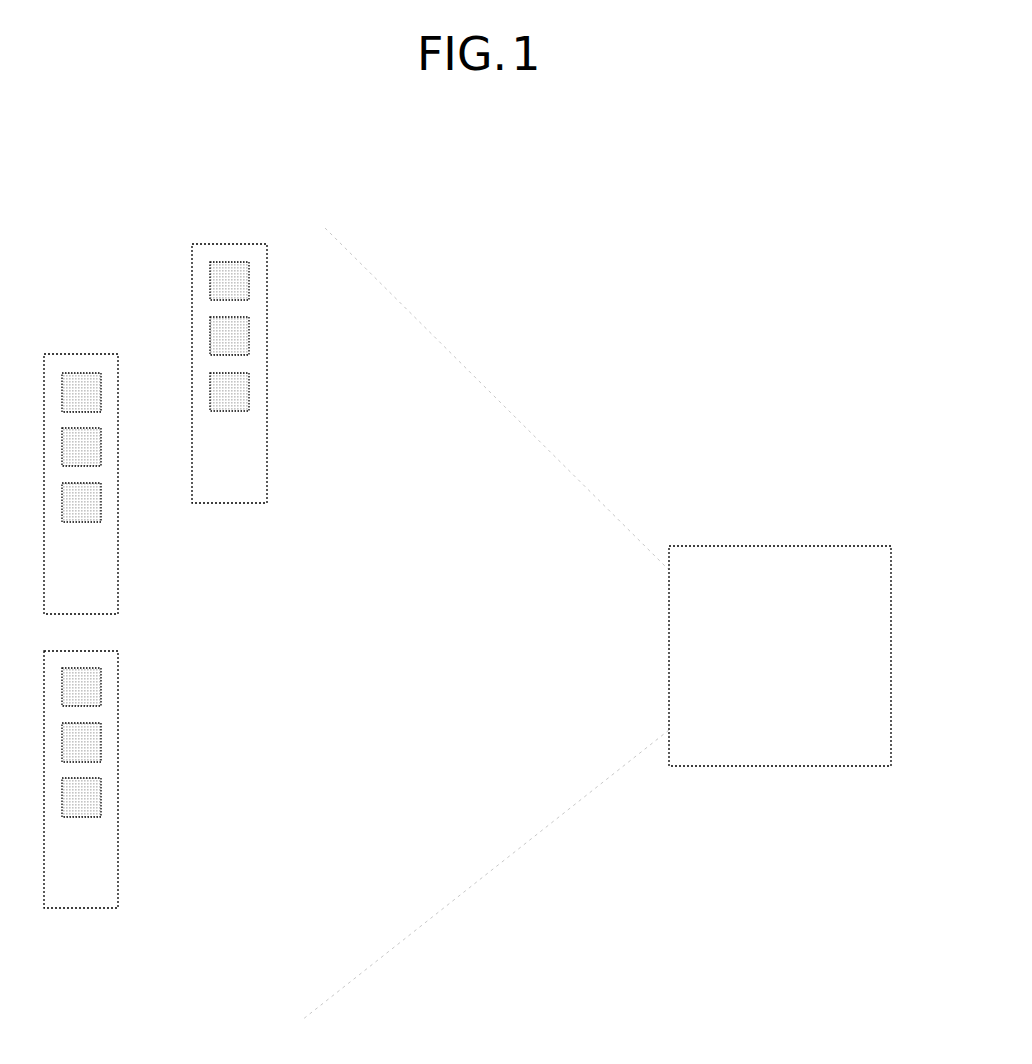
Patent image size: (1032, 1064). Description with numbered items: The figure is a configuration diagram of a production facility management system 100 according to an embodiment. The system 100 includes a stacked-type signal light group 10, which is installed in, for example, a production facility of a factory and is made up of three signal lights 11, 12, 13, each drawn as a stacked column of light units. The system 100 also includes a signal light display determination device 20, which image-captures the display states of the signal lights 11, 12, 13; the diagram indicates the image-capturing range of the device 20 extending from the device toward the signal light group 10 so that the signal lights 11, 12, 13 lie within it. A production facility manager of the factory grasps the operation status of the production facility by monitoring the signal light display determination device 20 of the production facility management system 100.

The production facility management system 100 is at (834, 215).
The stacked-type signal light group 10 is at (310, 191).
The signal light 11 is at (287, 381).
The signal light 12 is at (87, 343).
The signal light 13 is at (142, 756).
The signal light display determination device 20 is at (779, 535).